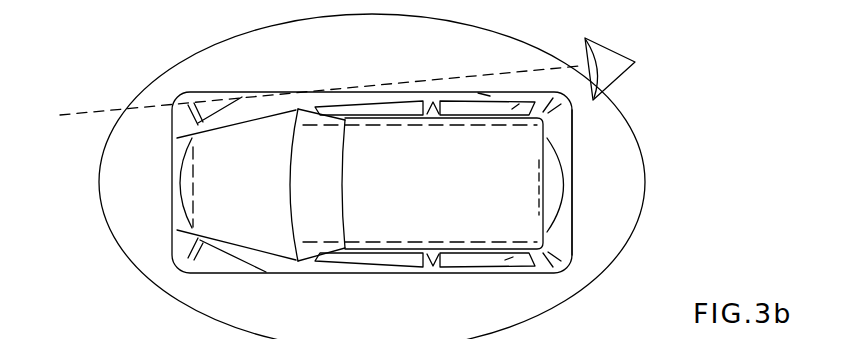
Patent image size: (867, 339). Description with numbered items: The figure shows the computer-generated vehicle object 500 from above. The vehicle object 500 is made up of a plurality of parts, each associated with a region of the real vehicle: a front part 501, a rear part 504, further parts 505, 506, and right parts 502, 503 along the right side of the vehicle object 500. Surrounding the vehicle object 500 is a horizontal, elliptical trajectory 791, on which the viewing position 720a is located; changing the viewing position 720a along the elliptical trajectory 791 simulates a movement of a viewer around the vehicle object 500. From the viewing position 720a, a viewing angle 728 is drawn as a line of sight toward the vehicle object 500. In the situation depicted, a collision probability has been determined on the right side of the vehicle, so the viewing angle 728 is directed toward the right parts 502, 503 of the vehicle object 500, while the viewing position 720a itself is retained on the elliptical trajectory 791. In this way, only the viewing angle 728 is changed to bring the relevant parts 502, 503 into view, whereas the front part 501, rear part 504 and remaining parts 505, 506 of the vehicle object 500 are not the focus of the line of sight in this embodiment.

The vehicle object 500 is at (347, 170).
The part of the vehicle object 501 is at (170, 248).
The right part of the vehicle object 502 is at (239, 90).
The right part of the vehicle object 503 is at (490, 90).
The rear part of the vehicle object 504 is at (572, 136).
The part of the vehicle object 505 is at (514, 276).
The part of the vehicle object 506 is at (209, 277).
The viewing position 720a is at (628, 49).
The viewing angle 728 is at (507, 74).
The elliptical trajectory 791 is at (643, 137).